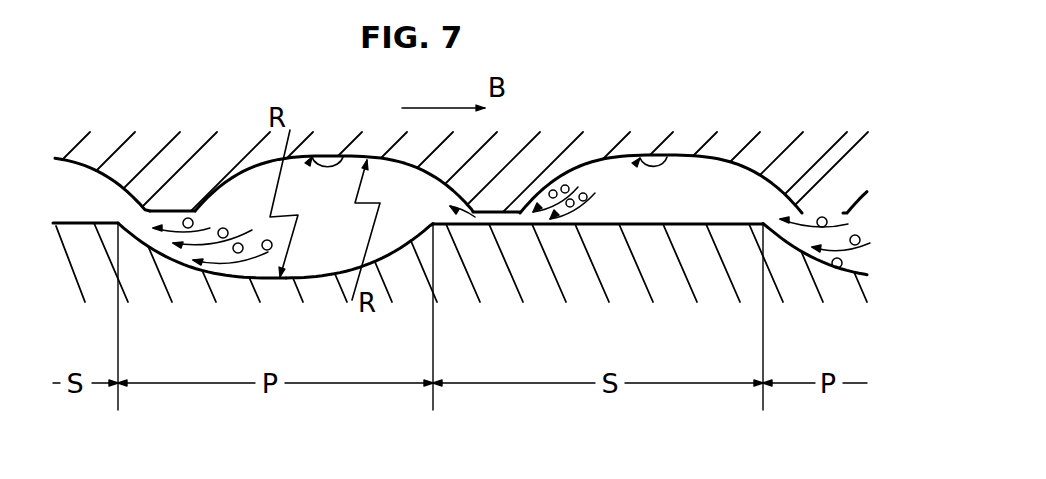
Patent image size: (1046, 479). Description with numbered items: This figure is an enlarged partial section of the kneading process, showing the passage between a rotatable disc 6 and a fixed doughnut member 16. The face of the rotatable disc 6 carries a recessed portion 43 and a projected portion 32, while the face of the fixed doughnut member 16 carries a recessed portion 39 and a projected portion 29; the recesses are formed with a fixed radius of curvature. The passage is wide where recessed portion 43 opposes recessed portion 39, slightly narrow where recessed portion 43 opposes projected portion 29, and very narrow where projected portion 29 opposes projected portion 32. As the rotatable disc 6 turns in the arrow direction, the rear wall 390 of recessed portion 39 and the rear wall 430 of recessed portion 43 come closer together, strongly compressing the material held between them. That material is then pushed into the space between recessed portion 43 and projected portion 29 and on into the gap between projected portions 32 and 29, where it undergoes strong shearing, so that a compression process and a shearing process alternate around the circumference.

The rotatable disc 6 is at (857, 127).
The recessed portion 43 is at (340, 155).
The rear wall 430 is at (215, 193).
The projected portion 32 is at (498, 216).
The fixed doughnut member 16 is at (681, 341).
The projected portion 29 is at (662, 222).
The recessed portion 39 is at (302, 268).
The rear wall 390 is at (415, 235).